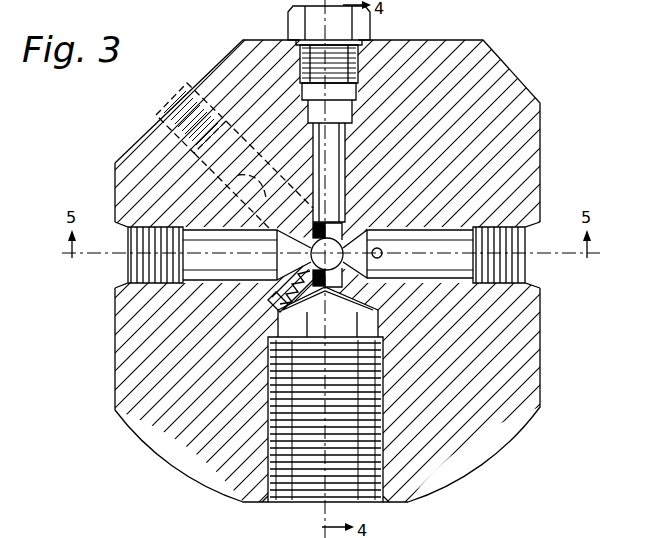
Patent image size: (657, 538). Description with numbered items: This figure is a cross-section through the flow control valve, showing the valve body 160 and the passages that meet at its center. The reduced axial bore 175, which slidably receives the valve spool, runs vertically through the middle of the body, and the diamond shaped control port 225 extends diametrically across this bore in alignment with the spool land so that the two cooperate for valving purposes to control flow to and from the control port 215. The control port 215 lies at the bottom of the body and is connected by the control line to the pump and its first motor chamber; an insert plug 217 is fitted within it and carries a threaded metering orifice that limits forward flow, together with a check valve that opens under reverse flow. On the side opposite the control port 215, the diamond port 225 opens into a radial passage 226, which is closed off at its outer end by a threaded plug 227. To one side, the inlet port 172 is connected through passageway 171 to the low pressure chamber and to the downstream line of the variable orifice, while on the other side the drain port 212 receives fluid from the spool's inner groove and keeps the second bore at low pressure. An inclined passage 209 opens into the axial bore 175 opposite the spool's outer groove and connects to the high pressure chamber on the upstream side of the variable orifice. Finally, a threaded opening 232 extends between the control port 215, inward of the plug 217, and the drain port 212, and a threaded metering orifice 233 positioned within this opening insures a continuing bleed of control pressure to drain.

The valve body 160 is at (524, 92).
The threaded plug 227 is at (294, 25).
The radial passage 226 is at (339, 153).
The axial bore 175 is at (340, 244).
The passageway 171 is at (382, 257).
The inlet port 172 is at (516, 268).
The drain port 212 is at (128, 272).
The passage 209 is at (286, 214).
The threaded metering orifice 233 is at (276, 290).
The threaded opening 232 is at (282, 309).
The diamond shaped control port 225 is at (336, 288).
The insert plug 217 is at (270, 375).
The control port 215 is at (312, 484).